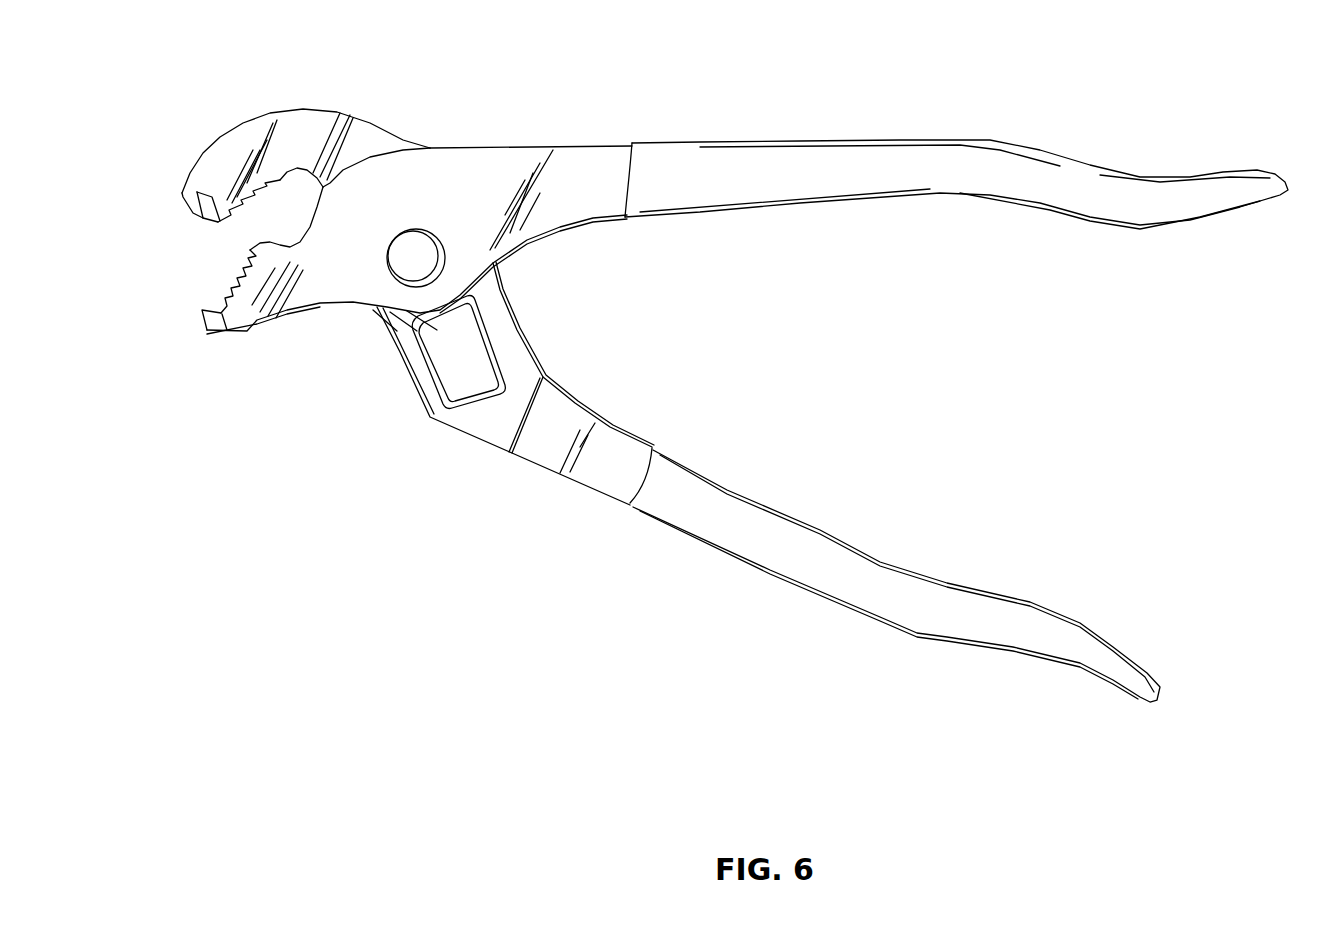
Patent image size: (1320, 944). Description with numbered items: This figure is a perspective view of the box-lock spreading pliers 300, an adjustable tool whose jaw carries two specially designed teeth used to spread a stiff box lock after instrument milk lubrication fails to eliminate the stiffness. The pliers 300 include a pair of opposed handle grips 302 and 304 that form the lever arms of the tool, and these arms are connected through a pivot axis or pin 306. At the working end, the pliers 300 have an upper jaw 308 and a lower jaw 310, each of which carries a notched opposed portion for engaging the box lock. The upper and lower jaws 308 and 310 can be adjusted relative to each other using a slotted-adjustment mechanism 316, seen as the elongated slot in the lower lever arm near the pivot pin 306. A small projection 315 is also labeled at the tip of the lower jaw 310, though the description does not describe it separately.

The box-lock spreading pliers 300 is at (735, 376).
The handle grip 302 is at (788, 585).
The handle grip 304 is at (980, 198).
The pivot axis or pin 306 is at (418, 237).
The upper jaw 308 is at (315, 108).
The lower jaw 310 is at (278, 325).
The jaw tip protrusion 315 is at (218, 337).
The slotted-adjustment mechanism 316 is at (545, 292).